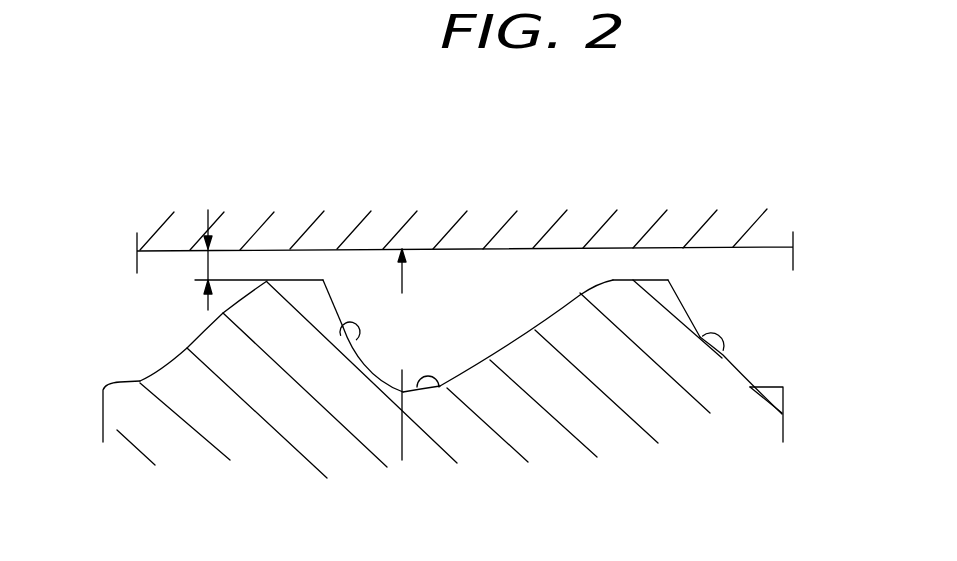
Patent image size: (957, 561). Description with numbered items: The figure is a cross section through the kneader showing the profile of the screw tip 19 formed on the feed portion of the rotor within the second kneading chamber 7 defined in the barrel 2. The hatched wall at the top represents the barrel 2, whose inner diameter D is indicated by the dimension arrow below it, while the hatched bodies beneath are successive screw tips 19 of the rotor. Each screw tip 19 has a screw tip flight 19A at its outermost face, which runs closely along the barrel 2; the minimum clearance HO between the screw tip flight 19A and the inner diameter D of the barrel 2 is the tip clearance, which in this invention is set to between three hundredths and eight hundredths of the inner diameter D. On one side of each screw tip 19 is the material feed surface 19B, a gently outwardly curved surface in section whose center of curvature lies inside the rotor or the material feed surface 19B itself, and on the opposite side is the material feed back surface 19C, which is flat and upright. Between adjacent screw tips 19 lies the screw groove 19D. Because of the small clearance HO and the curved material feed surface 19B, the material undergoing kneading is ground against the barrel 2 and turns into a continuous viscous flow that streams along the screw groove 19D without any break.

The barrel 2 is at (777, 228).
The second kneading chamber 7 is at (556, 293).
The screw tip 19 is at (337, 285).
The screw tip flight 19A is at (300, 278).
The material feed surface 19B is at (202, 332).
The material feed back surface 19C is at (283, 437).
The screw groove 19D is at (443, 387).
The minimum clearance HO is at (207, 268).
The inner diameter D is at (405, 354).